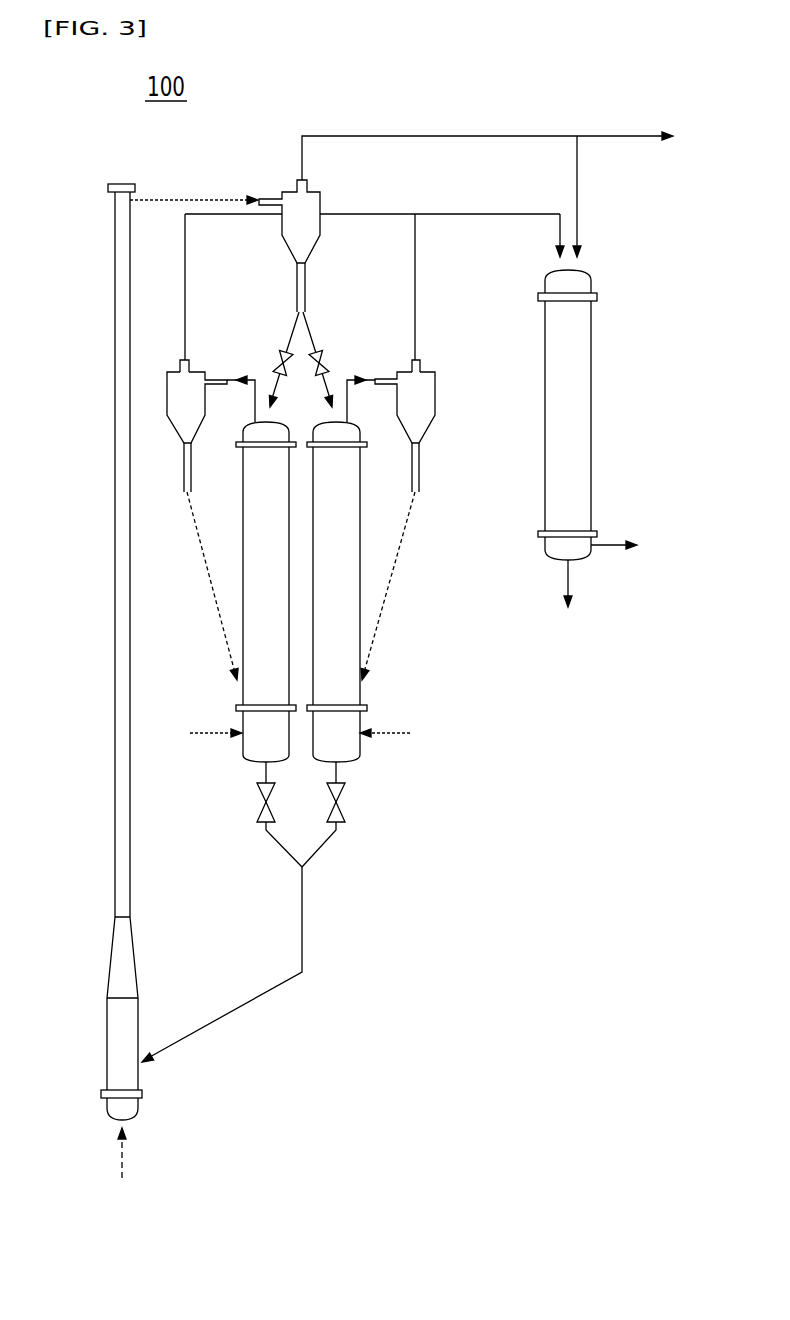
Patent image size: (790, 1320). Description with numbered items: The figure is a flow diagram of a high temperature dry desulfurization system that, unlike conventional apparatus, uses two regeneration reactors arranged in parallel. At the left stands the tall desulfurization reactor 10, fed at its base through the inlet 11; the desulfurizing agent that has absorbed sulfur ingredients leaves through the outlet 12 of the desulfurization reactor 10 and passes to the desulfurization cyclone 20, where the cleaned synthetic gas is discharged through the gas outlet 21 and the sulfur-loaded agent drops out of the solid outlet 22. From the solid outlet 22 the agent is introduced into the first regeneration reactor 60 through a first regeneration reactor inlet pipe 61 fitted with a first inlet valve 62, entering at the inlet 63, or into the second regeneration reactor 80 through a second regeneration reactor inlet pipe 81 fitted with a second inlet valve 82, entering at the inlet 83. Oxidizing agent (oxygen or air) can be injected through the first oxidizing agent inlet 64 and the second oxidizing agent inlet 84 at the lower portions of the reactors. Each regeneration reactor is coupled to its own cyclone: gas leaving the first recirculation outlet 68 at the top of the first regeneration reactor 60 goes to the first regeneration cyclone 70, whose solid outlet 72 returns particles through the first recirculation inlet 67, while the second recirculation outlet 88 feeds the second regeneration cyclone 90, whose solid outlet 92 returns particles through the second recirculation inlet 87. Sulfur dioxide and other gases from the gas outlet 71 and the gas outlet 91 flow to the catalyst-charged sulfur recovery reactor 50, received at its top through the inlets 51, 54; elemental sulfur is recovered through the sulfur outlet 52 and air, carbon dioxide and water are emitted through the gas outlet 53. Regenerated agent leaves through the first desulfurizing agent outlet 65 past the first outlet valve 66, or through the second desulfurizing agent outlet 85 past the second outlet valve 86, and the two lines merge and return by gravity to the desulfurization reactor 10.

The desulfurization reactor 10 is at (115, 627).
The riser inlet 11 is at (122, 1122).
The outlet of the desulfurization reactor 12 is at (133, 198).
The desulfurization cyclone 20 is at (318, 228).
The gas outlet of the desulfurization cyclone 21 is at (306, 185).
The solid outlet of the desulfurization cyclone 22 is at (299, 291).
The sulfur recovery reactor 50 is at (591, 399).
The catalyst vessel inlet 51 is at (557, 267).
The sulfur outlet 52 is at (565, 563).
The gas outlet 53 is at (597, 544).
The catalyst vessel gas inlet 54 is at (578, 267).
The first regeneration reactor 60 is at (243, 512).
The first regeneration reactor inlet pipe 61 is at (292, 336).
The first inlet valve 62 is at (279, 362).
The first stripper inlet 63 is at (265, 422).
The first oxidizing agent inlet 64 is at (243, 724).
The first desulfurizing agent outlet 65 is at (264, 770).
The first outlet valve 66 is at (262, 801).
The first recirculation inlet 67 is at (222, 628).
The first recirculation outlet 68 is at (256, 421).
The first regeneration cyclone 70 is at (166, 393).
The gas outlet of the first regeneration cyclone 71 is at (183, 360).
The solid outlet of the first regeneration cyclone 72 is at (184, 467).
The second regeneration reactor 80 is at (360, 692).
The second regeneration reactor inlet pipe 81 is at (311, 336).
The second inlet valve 82 is at (324, 362).
The second stripper inlet 83 is at (330, 422).
The second oxidizing agent inlet 84 is at (360, 724).
The second desulfurizing agent outlet 85 is at (338, 770).
The second outlet valve 86 is at (340, 801).
The second recirculation inlet 87 is at (382, 608).
The second recirculation outlet 88 is at (347, 422).
The second regeneration cyclone 90 is at (430, 397).
The gas outlet of the second regeneration cyclone 91 is at (421, 364).
The solid outlet of the second regeneration cyclone 92 is at (420, 472).